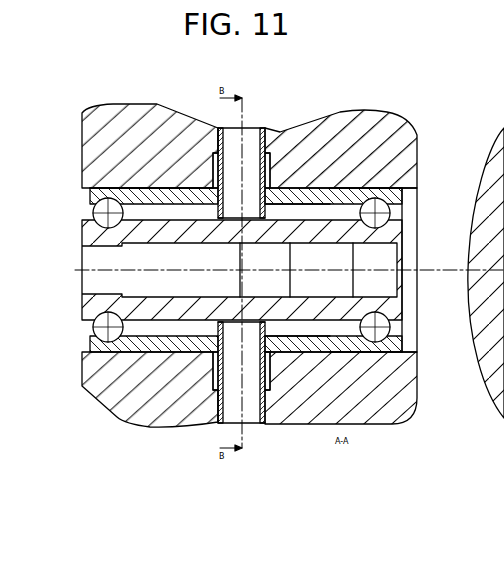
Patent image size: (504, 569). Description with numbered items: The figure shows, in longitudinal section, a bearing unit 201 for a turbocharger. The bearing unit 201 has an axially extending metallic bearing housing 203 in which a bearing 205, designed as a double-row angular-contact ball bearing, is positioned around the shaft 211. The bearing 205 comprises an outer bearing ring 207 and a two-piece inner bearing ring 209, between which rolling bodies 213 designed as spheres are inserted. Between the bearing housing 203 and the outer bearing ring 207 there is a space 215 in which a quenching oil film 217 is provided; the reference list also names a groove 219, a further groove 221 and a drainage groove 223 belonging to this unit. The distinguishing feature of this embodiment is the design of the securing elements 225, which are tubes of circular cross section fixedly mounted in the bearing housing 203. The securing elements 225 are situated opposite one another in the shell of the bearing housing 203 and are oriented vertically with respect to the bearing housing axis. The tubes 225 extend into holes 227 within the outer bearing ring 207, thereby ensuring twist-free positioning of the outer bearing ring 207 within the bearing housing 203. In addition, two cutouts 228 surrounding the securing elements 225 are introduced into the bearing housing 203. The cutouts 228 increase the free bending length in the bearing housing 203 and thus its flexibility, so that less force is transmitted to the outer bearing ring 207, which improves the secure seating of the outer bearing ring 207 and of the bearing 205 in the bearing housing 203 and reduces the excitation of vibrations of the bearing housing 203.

The bearing unit 201 is at (430, 112).
The bearing housing 203 is at (100, 148).
The bearing 205 is at (90, 202).
The outer bearing ring 207 is at (394, 186).
The inner bearing ring 209 is at (99, 238).
The shaft 211 is at (99, 270).
The rolling body 213 is at (96, 212).
The space 215 is at (314, 188).
The oil film 217 is at (299, 277).
The groove 219 is at (170, 187).
The groove 221 is at (351, 187).
The drainage groove 223 is at (212, 186).
The securing element 225 is at (252, 150).
The holes 227 is at (300, 187).
The cutouts 228 is at (205, 187).